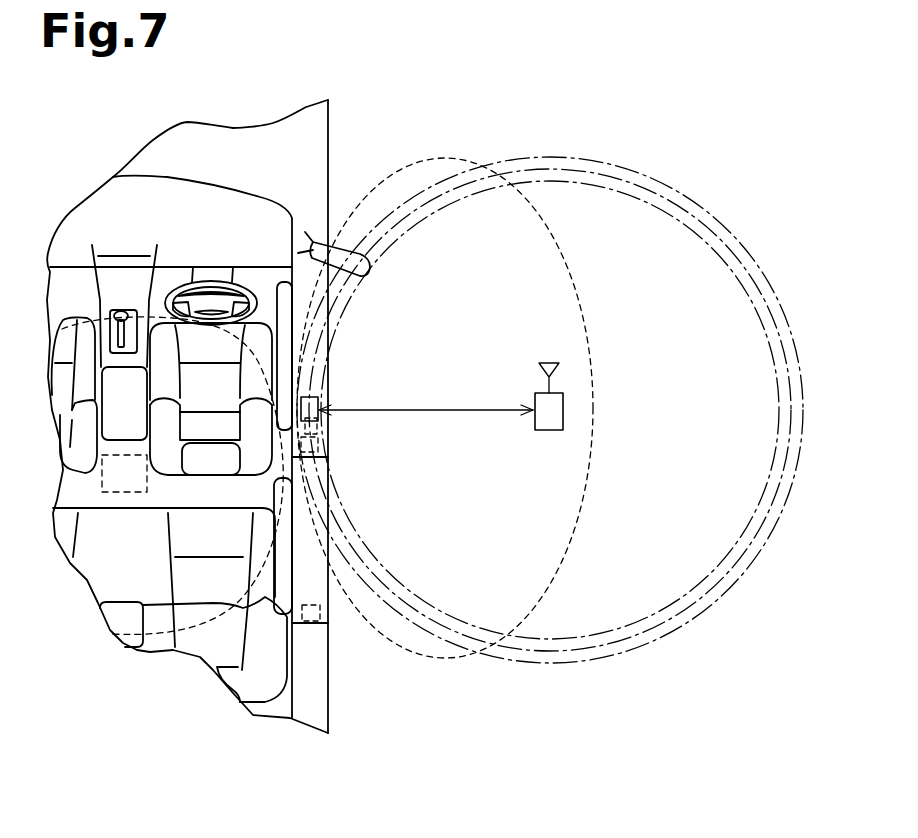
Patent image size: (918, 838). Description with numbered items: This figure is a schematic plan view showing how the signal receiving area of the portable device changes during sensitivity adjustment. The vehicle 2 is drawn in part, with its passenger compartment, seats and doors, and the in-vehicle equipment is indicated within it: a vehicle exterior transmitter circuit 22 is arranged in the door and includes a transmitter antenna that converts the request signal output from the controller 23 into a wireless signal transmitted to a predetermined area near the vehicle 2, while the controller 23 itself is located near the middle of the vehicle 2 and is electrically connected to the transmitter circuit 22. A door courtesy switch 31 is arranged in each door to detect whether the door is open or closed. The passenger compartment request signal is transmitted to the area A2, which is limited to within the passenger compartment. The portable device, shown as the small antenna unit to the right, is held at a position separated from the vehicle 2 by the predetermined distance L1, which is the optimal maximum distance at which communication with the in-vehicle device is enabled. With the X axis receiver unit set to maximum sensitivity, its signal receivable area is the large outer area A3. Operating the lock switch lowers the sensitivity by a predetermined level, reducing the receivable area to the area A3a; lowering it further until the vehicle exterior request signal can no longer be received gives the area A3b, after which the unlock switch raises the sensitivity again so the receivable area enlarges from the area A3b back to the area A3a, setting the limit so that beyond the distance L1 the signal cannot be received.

The vehicle 2 is at (313, 140).
The vehicle exterior transmitter circuit 22 is at (316, 375).
The controller 23 is at (122, 492).
The door courtesy switch 31 is at (318, 440).
The predetermined distance L1 is at (463, 410).
The area A2 is at (333, 507).
The area A3 is at (547, 165).
The area A3a is at (578, 175).
The area A3b is at (673, 218).